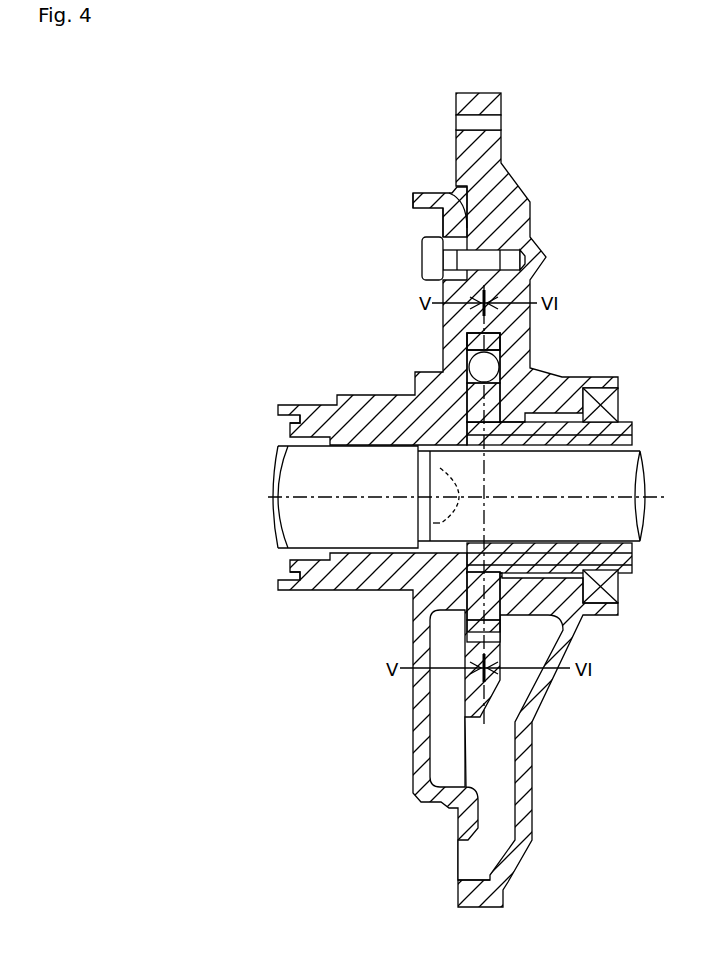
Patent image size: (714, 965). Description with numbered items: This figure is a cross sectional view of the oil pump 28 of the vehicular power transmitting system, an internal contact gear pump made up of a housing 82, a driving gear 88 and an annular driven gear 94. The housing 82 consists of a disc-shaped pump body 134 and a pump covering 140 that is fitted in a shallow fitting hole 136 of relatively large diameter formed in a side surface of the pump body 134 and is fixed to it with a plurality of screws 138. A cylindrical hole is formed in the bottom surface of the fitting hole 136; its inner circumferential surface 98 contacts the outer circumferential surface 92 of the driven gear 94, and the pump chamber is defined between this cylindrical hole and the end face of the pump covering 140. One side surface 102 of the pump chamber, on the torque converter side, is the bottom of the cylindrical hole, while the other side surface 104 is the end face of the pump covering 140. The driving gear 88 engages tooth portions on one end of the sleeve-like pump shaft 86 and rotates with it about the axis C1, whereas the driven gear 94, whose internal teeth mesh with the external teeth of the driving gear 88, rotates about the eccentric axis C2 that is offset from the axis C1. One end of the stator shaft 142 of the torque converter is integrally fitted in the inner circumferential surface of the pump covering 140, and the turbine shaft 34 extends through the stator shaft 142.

The oil pump 28 is at (577, 128).
The turbine shaft 34 is at (290, 476).
The housing 82 is at (414, 164).
The pump shaft 86 is at (560, 428).
The driving gear 88 is at (466, 600).
The outer circumferential surface 92 is at (470, 332).
The annular driven gear 94 is at (470, 345).
The inner circumferential surface 98 is at (468, 626).
The side surface 102 is at (492, 368).
The side surface 104 is at (470, 362).
The pump body 134 is at (464, 105).
The fitting hole 136 is at (447, 225).
The screws 138 is at (428, 259).
The pump covering 140 is at (432, 195).
The stator shaft 142 is at (292, 430).
The axis C1 is at (433, 523).
The eccentric axis C2 is at (433, 468).